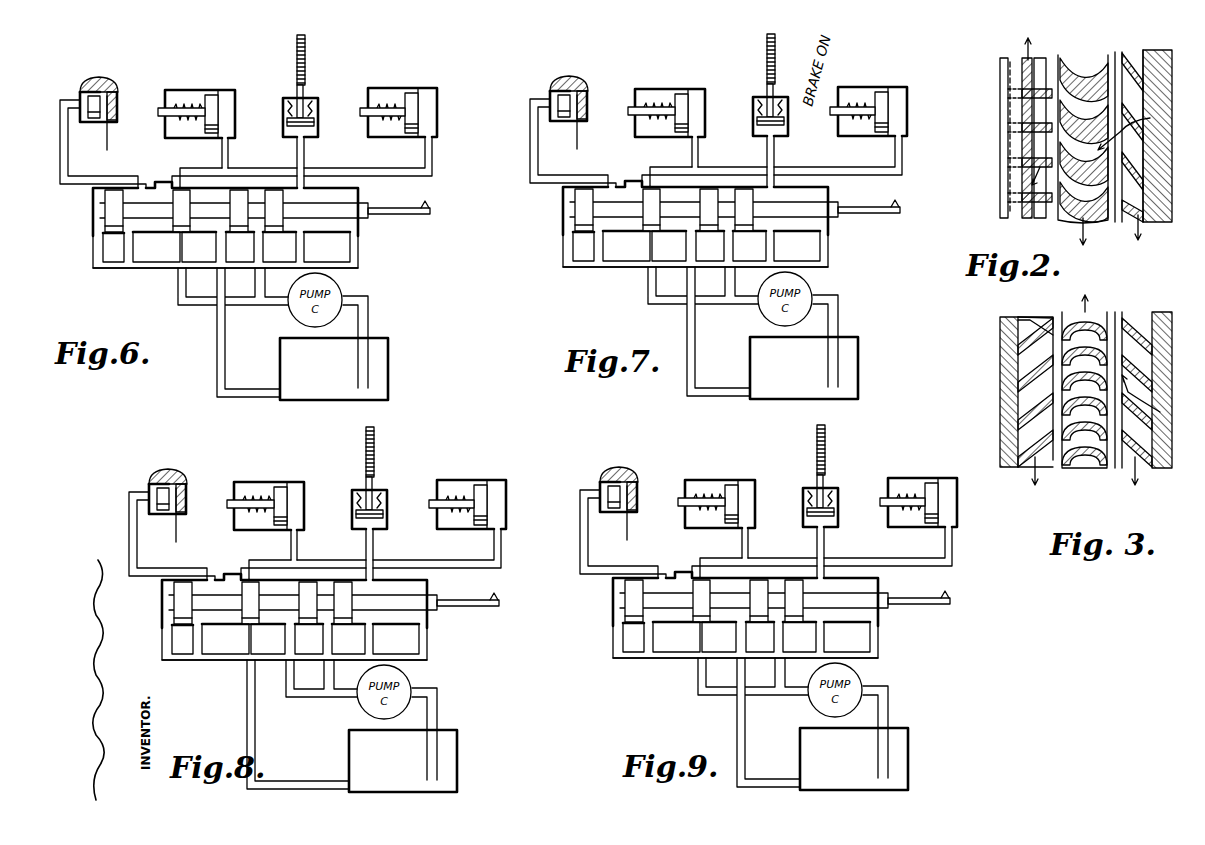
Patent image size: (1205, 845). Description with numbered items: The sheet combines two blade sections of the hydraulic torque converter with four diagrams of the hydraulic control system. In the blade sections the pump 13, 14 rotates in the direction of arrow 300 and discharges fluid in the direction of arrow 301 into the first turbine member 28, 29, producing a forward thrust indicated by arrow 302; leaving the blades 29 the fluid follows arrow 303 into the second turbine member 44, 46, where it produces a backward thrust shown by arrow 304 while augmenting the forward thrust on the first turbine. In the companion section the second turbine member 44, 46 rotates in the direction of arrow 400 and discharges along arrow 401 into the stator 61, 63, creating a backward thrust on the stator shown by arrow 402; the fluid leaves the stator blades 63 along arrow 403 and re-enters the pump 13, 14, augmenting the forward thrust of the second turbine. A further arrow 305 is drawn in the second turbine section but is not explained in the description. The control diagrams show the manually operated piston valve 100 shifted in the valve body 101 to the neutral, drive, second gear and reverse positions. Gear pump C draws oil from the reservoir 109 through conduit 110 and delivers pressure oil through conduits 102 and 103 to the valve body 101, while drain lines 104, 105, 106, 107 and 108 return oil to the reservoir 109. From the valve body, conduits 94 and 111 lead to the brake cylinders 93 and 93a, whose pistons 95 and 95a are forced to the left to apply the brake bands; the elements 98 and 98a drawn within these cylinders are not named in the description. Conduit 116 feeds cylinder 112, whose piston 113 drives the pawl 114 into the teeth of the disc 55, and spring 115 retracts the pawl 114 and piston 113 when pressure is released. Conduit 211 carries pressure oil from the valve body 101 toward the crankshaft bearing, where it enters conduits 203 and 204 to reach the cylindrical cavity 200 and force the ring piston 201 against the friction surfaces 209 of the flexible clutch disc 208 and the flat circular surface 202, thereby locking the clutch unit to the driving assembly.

In FIG. 2, the pump 13 is at (1140, 98).
In FIG. 3, the pump 13 is at (1140, 378).
In FIG. 2, the pump 14 is at (1165, 76).
In FIG. 3, the pump 14 is at (1170, 338).
In FIG. 2, the first turbine member 28 is at (1068, 62).
In FIG. 2, the blades 29 is at (1083, 97).
In FIG. 2, the second turbine member 44 is at (1030, 106).
In FIG. 3, the second turbine member 44 is at (1000, 370).
In FIG. 2, the second turbine member 46 is at (1040, 152).
In FIG. 3, the second turbine member 46 is at (1030, 338).
In FIG. 6, the disc 55 is at (306, 47).
In FIG. 7, the disc 55 is at (786, 59).
In FIG. 8, the disc 55 is at (385, 452).
In FIG. 9, the disc 55 is at (836, 450).
In FIG. 3, the stator 61 is at (1100, 314).
In FIG. 3, the blades 63 is at (1045, 315).
In FIG. 6, the cylinder 93 is at (382, 138).
In FIG. 7, the cylinder 93 is at (859, 123).
In FIG. 8, the cylinder 93 is at (458, 516).
In FIG. 9, the cylinder 93 is at (909, 514).
In FIG. 6, the cylinder 93a is at (182, 138).
In FIG. 7, the cylinder 93a is at (658, 123).
In FIG. 8, the cylinder 93a is at (257, 516).
In FIG. 9, the cylinder 93a is at (708, 514).
In FIG. 6, the conduit 94 is at (432, 153).
In FIG. 7, the conduit 94 is at (785, 161).
In FIG. 8, the conduit 94 is at (384, 554).
In FIG. 9, the conduit 94 is at (835, 552).
In FIG. 6, the piston 95 is at (414, 94).
In FIG. 7, the piston 95 is at (872, 97).
In FIG. 8, the piston 95 is at (471, 490).
In FIG. 9, the piston 95 is at (922, 488).
In FIG. 6, the piston 95a is at (222, 94).
In FIG. 7, the piston 95a is at (675, 100).
In FIG. 8, the piston 95a is at (274, 493).
In FIG. 9, the piston 95a is at (725, 491).
In FIG. 6, the spring 98 is at (383, 108).
In FIG. 7, the spring 98 is at (857, 90).
In FIG. 8, the spring 98 is at (456, 483).
In FIG. 9, the spring 98 is at (907, 481).
In FIG. 6, the spring 98a is at (184, 108).
In FIG. 7, the spring 98a is at (658, 91).
In FIG. 8, the spring 98a is at (257, 484).
In FIG. 9, the spring 98a is at (708, 482).
In FIG. 6, the piston valve 100 is at (376, 215).
In FIG. 7, the piston valve 100 is at (762, 210).
In FIG. 8, the piston valve 100 is at (361, 603).
In FIG. 9, the piston valve 100 is at (812, 599).
In FIG. 6, the valve body 101 is at (358, 190).
In FIG. 7, the valve body 101 is at (713, 223).
In FIG. 8, the valve body 101 is at (312, 616).
In FIG. 9, the valve body 101 is at (763, 614).
In FIG. 6, the conduit 102 is at (185, 248).
In FIG. 7, the conduit 102 is at (670, 246).
In FIG. 8, the conduit 102 is at (269, 639).
In FIG. 9, the conduit 102 is at (720, 637).
In FIG. 6, the conduit 103 is at (265, 248).
In FIG. 7, the conduit 103 is at (750, 246).
In FIG. 8, the conduit 103 is at (349, 639).
In FIG. 9, the conduit 103 is at (800, 637).
In FIG. 6, the drain line 104 is at (103, 250).
In FIG. 7, the drain line 104 is at (562, 246).
In FIG. 8, the drain line 104 is at (161, 639).
In FIG. 9, the drain line 104 is at (612, 637).
In FIG. 6, the drain line 105 is at (138, 248).
In FIG. 7, the drain line 105 is at (626, 246).
In FIG. 8, the drain line 105 is at (225, 639).
In FIG. 9, the drain line 105 is at (676, 637).
In FIG. 6, the drain line 106 is at (228, 248).
In FIG. 7, the drain line 106 is at (712, 246).
In FIG. 8, the drain line 106 is at (311, 639).
In FIG. 9, the drain line 106 is at (762, 637).
In FIG. 6, the drain line 107 is at (308, 248).
In FIG. 7, the drain line 107 is at (797, 246).
In FIG. 8, the drain line 107 is at (396, 639).
In FIG. 9, the drain line 107 is at (847, 637).
In FIG. 6, the drain line 108 is at (358, 250).
In FIG. 7, the drain line 108 is at (712, 253).
In FIG. 8, the drain line 108 is at (311, 646).
In FIG. 9, the drain line 108 is at (762, 644).
In FIG. 6, the reservoir 109 is at (389, 370).
In FIG. 7, the reservoir 109 is at (811, 368).
In FIG. 8, the reservoir 109 is at (410, 761).
In FIG. 9, the reservoir 109 is at (861, 759).
In FIG. 6, the conduit 110 is at (369, 315).
In FIG. 7, the conduit 110 is at (844, 341).
In FIG. 8, the conduit 110 is at (443, 734).
In FIG. 9, the conduit 110 is at (894, 732).
In FIG. 6, the conduit 111 is at (228, 160).
In FIG. 7, the conduit 111 is at (713, 152).
In FIG. 8, the conduit 111 is at (312, 545).
In FIG. 9, the conduit 111 is at (763, 543).
In FIG. 6, the cylinder 112 is at (318, 127).
In FIG. 7, the cylinder 112 is at (786, 116).
In FIG. 8, the cylinder 112 is at (385, 509).
In FIG. 9, the cylinder 112 is at (836, 507).
In FIG. 6, the piston 113 is at (287, 124).
In FIG. 7, the piston 113 is at (755, 123).
In FIG. 8, the piston 113 is at (354, 516).
In FIG. 9, the piston 113 is at (805, 514).
In FIG. 6, the pawl 114 is at (304, 90).
In FIG. 7, the pawl 114 is at (791, 97).
In FIG. 8, the pawl 114 is at (390, 490).
In FIG. 9, the pawl 114 is at (841, 488).
In FIG. 6, the spring 115 is at (288, 110).
In FIG. 7, the spring 115 is at (754, 109).
In FIG. 8, the spring 115 is at (353, 502).
In FIG. 9, the spring 115 is at (804, 500).
In FIG. 6, the conduit 116 is at (305, 153).
In FIG. 7, the conduit 116 is at (791, 161).
In FIG. 8, the conduit 116 is at (390, 554).
In FIG. 9, the conduit 116 is at (841, 552).
In FIG. 6, the cylindrical cavity 200 is at (90, 120).
In FIG. 7, the cylindrical cavity 200 is at (562, 115).
In FIG. 8, the cylindrical cavity 200 is at (161, 508).
In FIG. 9, the cylindrical cavity 200 is at (612, 506).
In FIG. 6, the ring piston 201 is at (84, 98).
In FIG. 7, the ring piston 201 is at (538, 88).
In FIG. 8, the ring piston 201 is at (137, 481).
In FIG. 9, the ring piston 201 is at (588, 479).
In FIG. 6, the circular surface 202 is at (117, 104).
In FIG. 7, the circular surface 202 is at (600, 103).
In FIG. 8, the circular surface 202 is at (199, 496).
In FIG. 9, the circular surface 202 is at (650, 494).
In FIG. 6, the conduit 203 is at (100, 172).
In FIG. 7, the conduit 203 is at (573, 147).
In FIG. 8, the conduit 203 is at (172, 540).
In FIG. 9, the conduit 203 is at (623, 538).
In FIG. 6, the conduit 204 is at (60, 164).
In FIG. 7, the conduit 204 is at (558, 143).
In FIG. 8, the conduit 204 is at (157, 536).
In FIG. 9, the conduit 204 is at (608, 534).
In FIG. 6, the flexible clutch disc 208 is at (108, 143).
In FIG. 7, the flexible clutch disc 208 is at (596, 122).
In FIG. 8, the flexible clutch disc 208 is at (195, 515).
In FIG. 9, the flexible clutch disc 208 is at (646, 513).
In FIG. 6, the friction surfaces 209 is at (110, 80).
In FIG. 7, the friction surfaces 209 is at (580, 74).
In FIG. 8, the friction surfaces 209 is at (179, 467).
In FIG. 9, the friction surfaces 209 is at (630, 465).
In FIG. 6, the conduit 211 is at (158, 178).
In FIG. 7, the conduit 211 is at (620, 168).
In FIG. 8, the conduit 211 is at (219, 561).
In FIG. 9, the conduit 211 is at (670, 559).
In FIG. 2, the arrow 300 is at (1141, 233).
In FIG. 3, the arrow 300 is at (1138, 476).
In FIG. 2, the arrow 301 is at (1150, 118).
In FIG. 2, the arrow 302 is at (1078, 226).
In FIG. 2, the arrow 303 is at (1022, 114).
In FIG. 2, the arrow 304 is at (1032, 50).
In FIG. 2, the tab 305 is at (1022, 172).
In FIG. 3, the arrow 400 is at (1032, 472).
In FIG. 3, the arrow 401 is at (1037, 401).
In FIG. 3, the arrow 402 is at (1080, 308).
In FIG. 3, the arrow 403 is at (1160, 412).